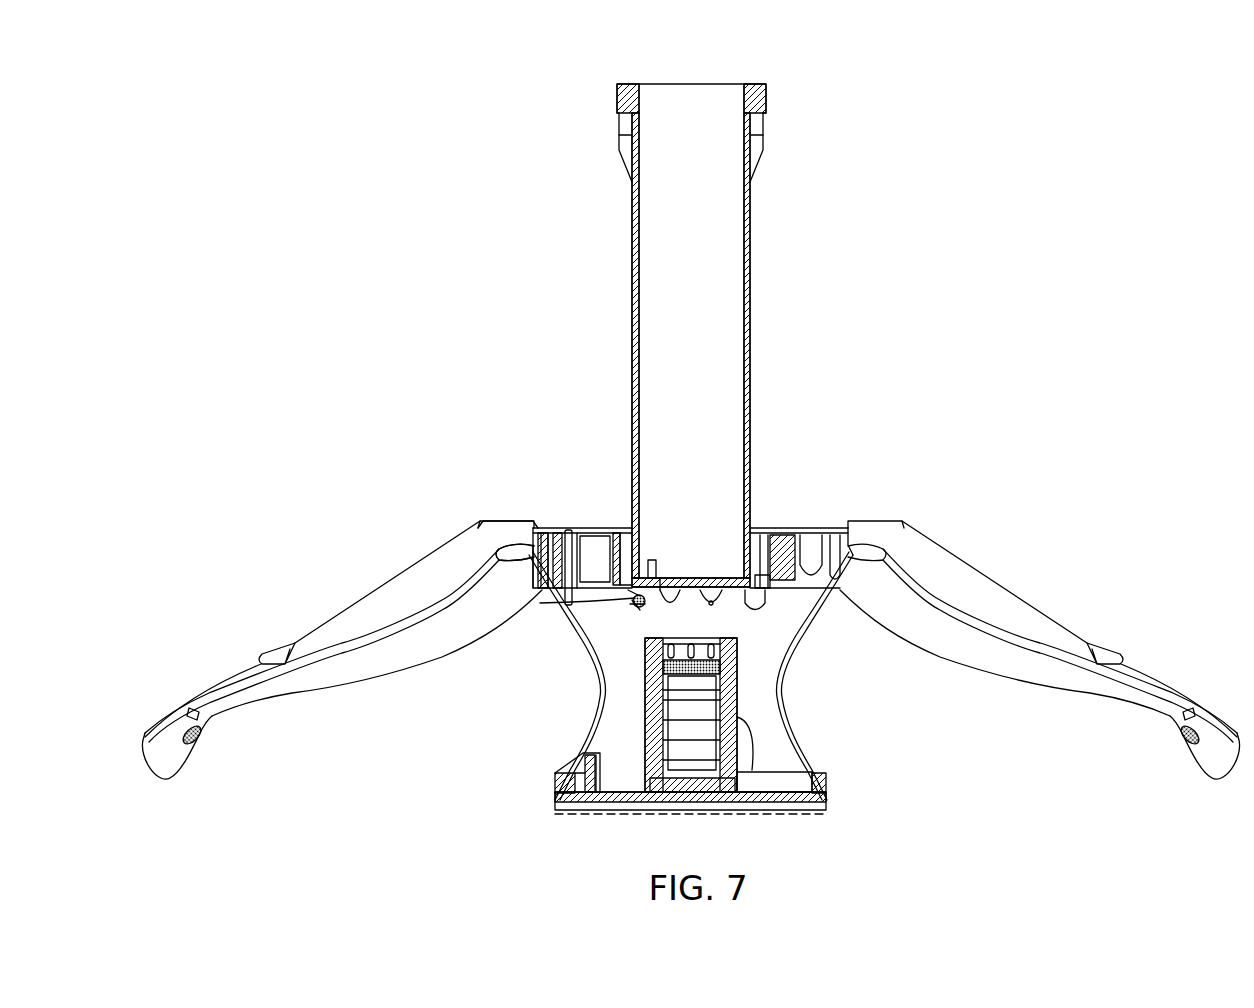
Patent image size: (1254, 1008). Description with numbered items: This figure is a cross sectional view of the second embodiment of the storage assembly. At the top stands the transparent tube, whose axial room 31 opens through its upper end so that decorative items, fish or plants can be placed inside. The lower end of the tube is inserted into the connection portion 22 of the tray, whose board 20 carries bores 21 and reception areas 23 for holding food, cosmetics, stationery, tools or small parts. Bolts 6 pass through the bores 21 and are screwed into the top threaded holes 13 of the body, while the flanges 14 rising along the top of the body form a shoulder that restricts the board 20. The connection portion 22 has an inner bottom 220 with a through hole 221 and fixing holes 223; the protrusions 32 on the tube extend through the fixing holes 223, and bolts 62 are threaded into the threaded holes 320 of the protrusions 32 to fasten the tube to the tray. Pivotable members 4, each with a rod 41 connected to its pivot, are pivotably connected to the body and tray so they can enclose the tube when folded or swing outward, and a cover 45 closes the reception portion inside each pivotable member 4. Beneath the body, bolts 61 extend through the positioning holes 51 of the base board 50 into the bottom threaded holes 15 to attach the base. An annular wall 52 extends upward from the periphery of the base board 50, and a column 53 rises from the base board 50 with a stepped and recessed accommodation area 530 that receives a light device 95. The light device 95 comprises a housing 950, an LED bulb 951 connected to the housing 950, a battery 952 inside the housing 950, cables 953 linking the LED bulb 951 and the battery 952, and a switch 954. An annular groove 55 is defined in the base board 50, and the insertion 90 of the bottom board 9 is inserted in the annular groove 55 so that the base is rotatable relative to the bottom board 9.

The room 31 is at (703, 105).
The board 20 is at (536, 527).
The bore 21 is at (572, 528).
The connection portion 22 is at (615, 528).
The reception area 23 is at (586, 528).
The bolt 6 is at (543, 528).
The inner bottom 220 is at (653, 580).
The through hole 221 is at (665, 590).
The bolt 62 is at (640, 605).
The threaded hole 320 is at (640, 597).
The fixing hole 223 is at (640, 600).
The protrusion 32 is at (636, 605).
The flange 14 is at (480, 522).
The rod 41 is at (530, 555).
The top threaded hole 13 is at (545, 580).
The pivotable member 4 is at (160, 728).
The cover 45 is at (262, 656).
The bottom threaded hole 15 is at (583, 750).
The light device 95 is at (664, 733).
The column 53 is at (737, 642).
The accommodation area 530 is at (737, 663).
The LED bulb 951 is at (645, 660).
The cable 953 is at (645, 740).
The housing 950 is at (645, 690).
The battery 952 is at (703, 690).
The switch 954 is at (685, 800).
The bottom board 9 is at (677, 792).
The insertion 90 is at (806, 810).
The annular wall 52 is at (555, 785).
The bolt 61 is at (590, 796).
The positioning hole 51 is at (599, 797).
The annular groove 55 is at (827, 800).
The base board 50 is at (787, 790).